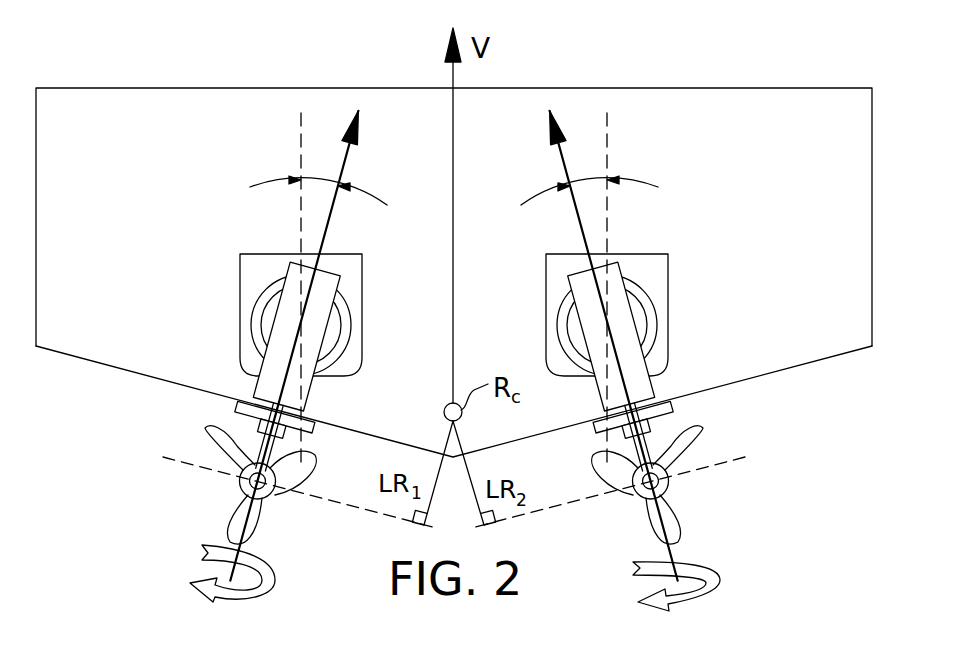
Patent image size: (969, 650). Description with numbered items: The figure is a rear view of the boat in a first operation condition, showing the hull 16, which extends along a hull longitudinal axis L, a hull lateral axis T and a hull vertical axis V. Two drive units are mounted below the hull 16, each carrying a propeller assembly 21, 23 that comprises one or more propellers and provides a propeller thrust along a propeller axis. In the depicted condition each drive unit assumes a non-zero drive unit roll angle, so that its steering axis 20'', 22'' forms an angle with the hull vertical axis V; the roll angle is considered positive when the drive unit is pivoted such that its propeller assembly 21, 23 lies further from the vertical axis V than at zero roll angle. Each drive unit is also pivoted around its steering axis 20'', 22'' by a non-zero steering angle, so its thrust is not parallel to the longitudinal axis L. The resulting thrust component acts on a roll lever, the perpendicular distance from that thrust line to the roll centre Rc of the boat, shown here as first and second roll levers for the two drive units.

The hull 16 is at (103, 315).
The steering axis of the first drive unit 20'' is at (326, 346).
The steering axis of the second drive unit 22'' is at (586, 346).
The propeller assembly 21 is at (193, 498).
The propeller assembly 23 is at (715, 498).